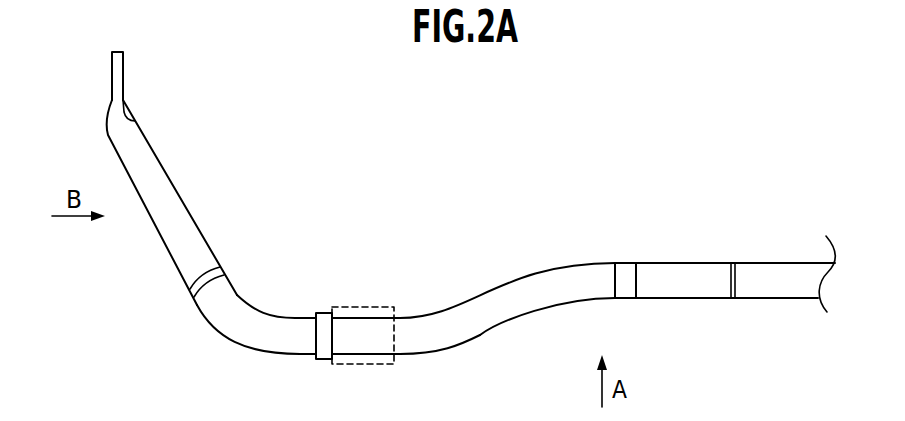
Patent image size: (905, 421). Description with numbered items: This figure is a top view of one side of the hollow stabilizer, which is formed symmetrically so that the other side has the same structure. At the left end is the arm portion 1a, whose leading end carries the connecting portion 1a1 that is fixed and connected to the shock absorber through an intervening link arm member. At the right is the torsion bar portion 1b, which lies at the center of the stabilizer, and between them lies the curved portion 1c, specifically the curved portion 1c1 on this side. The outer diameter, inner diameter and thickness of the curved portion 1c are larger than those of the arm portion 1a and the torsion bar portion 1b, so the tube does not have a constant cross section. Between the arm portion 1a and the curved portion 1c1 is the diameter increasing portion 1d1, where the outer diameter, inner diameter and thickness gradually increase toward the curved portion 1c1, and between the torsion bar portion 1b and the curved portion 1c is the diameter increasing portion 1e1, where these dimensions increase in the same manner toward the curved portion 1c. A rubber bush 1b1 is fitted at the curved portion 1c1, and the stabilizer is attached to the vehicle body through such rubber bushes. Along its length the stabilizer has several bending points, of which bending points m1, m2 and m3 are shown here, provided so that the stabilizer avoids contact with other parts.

The connecting portion 1a1 is at (123, 71).
The arm portion 1a is at (145, 118).
The diameter increasing portion 1d1 is at (190, 290).
The bending point m3 is at (258, 337).
The rubber bush 1b1 is at (366, 366).
The bending point m2 is at (428, 338).
The bending point m1 is at (553, 290).
The curved portion 1c1 is at (473, 290).
The curved portion 1c is at (428, 272).
The diameter increasing portion 1e1 is at (643, 306).
The torsion bar portion 1b is at (825, 240).